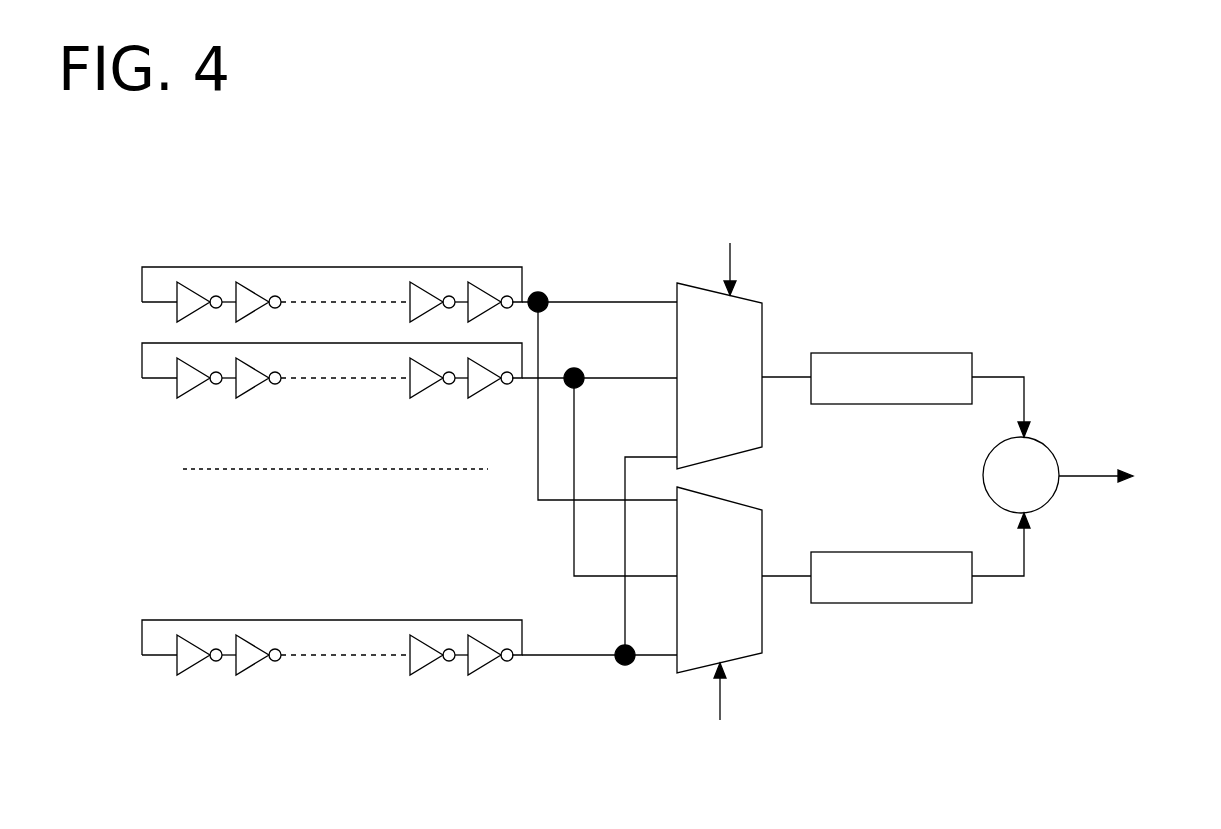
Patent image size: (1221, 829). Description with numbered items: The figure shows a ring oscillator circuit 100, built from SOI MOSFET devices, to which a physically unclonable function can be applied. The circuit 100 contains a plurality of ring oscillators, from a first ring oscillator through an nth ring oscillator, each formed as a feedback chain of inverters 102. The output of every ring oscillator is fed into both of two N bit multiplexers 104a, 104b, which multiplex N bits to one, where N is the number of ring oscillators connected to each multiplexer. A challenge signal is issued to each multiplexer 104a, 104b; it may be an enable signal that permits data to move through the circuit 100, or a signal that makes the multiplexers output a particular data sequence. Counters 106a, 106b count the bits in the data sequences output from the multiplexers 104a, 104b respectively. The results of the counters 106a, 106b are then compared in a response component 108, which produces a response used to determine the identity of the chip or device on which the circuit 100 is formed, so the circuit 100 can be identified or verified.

The ring oscillator circuit 100 is at (427, 112).
The inverters 102 is at (207, 378).
The multiplexer 104a is at (677, 288).
The multiplexer 104b is at (677, 672).
The counter 106a is at (893, 353).
The counter 106b is at (920, 603).
The response component 108 is at (1049, 505).